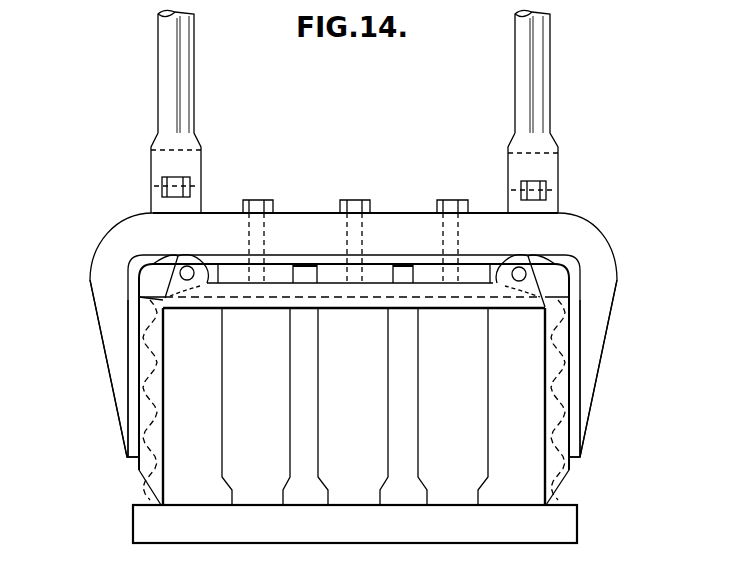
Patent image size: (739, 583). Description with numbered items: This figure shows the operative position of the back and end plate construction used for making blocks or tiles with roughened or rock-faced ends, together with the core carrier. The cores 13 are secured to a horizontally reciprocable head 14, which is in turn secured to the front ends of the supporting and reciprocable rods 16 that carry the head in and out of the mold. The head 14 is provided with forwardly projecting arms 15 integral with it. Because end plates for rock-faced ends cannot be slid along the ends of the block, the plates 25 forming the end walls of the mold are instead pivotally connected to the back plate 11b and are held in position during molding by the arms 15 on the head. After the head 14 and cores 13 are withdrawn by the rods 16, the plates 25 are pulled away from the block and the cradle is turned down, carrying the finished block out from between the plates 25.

The back plate 11b is at (363, 295).
The cores 13 is at (355, 406).
The head 14 is at (288, 222).
The arms 15 is at (118, 356).
The supporting and reciprocable rods 16 is at (180, 98).
The plates 25 is at (148, 422).